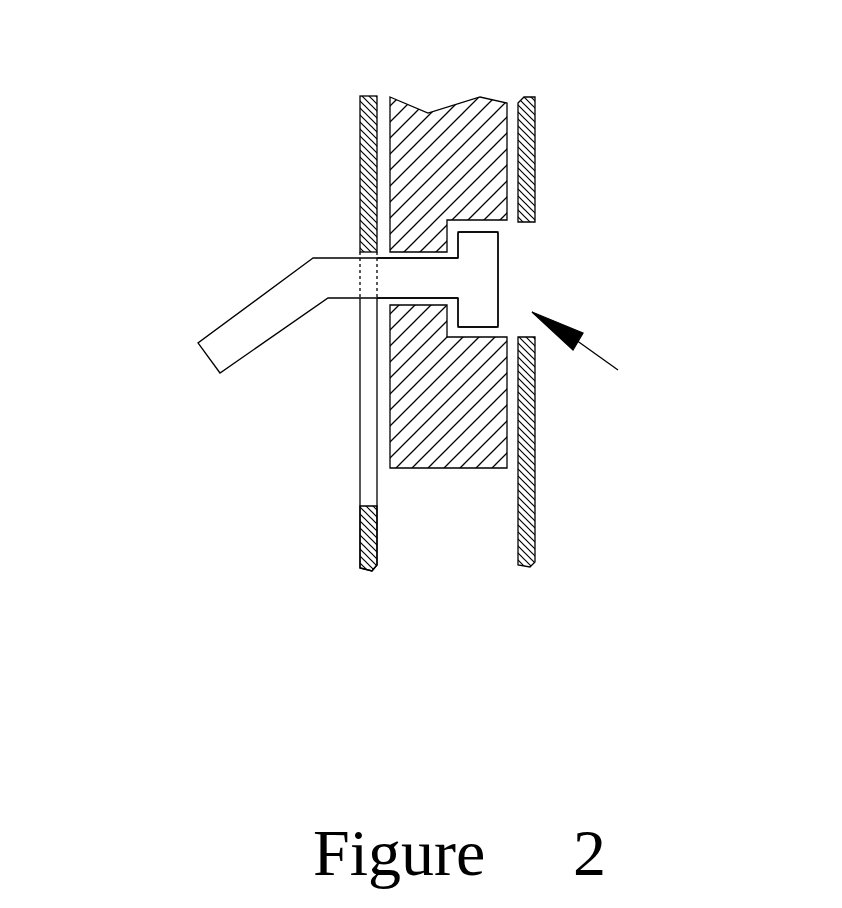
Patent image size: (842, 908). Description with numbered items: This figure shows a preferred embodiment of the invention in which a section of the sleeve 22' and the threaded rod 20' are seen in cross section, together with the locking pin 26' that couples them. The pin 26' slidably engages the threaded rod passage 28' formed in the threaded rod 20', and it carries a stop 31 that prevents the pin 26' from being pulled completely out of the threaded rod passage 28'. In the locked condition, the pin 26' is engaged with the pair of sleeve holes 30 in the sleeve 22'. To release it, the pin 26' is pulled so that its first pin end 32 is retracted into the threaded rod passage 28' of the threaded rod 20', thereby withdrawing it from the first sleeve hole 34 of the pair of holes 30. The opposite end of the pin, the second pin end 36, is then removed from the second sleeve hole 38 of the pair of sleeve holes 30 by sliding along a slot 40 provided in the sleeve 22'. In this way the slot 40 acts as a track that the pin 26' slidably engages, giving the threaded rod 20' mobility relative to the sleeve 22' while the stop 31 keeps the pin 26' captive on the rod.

The threaded rod 20' is at (448, 468).
The sleeve 22' is at (295, 583).
The pin 26' is at (286, 302).
The threaded rod passage 28' is at (309, 178).
The sleeve holes 30 is at (537, 250).
The stop 31 is at (485, 185).
The first pin end 32 is at (498, 282).
The first sleeve hole 34 is at (613, 362).
The second pin end 36 is at (357, 302).
The second sleeve hole 38 is at (360, 250).
The slot 40 is at (359, 485).